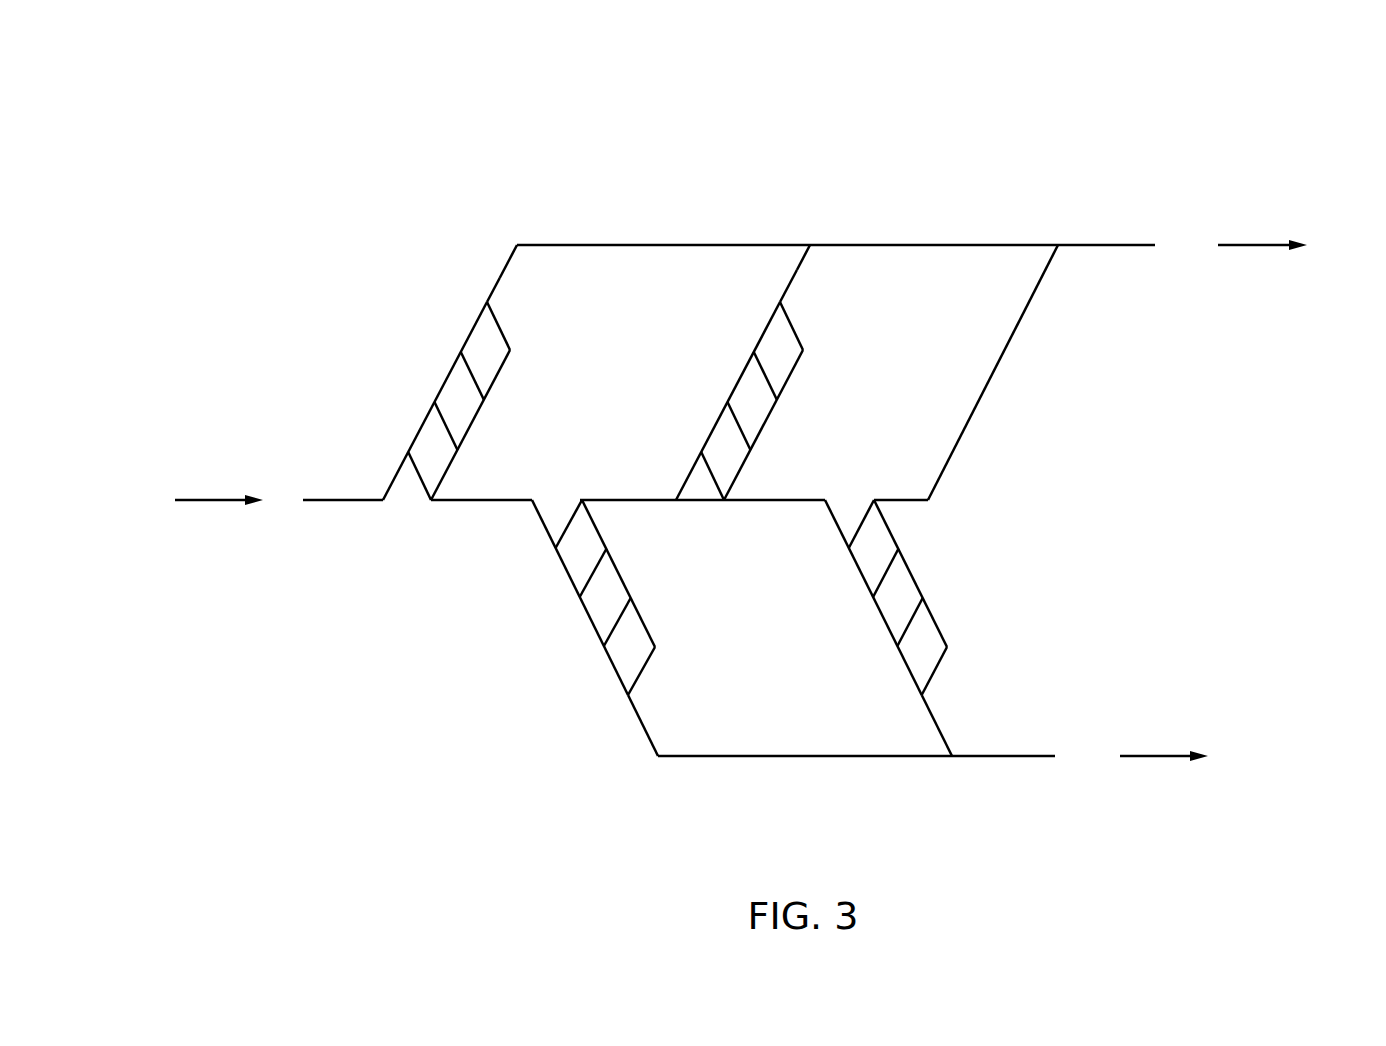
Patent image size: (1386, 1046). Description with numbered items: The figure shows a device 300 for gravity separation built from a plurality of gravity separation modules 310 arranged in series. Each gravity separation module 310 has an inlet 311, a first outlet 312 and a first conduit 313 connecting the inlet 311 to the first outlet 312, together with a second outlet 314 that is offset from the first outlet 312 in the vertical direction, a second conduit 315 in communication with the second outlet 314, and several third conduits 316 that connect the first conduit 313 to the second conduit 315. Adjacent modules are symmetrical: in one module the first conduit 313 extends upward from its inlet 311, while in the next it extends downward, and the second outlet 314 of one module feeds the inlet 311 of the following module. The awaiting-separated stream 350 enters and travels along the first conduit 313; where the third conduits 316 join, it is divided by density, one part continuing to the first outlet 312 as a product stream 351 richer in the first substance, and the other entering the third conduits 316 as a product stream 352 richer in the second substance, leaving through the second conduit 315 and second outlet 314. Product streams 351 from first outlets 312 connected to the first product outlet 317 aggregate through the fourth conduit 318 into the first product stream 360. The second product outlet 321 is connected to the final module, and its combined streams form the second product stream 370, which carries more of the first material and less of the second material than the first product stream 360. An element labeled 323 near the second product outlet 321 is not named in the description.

The device for gravity separation 300 is at (1240, 120).
The gravity separation module 310 is at (518, 228).
The inlet 311 is at (345, 500).
The first outlet 312 is at (492, 290).
The first conduit 313 is at (448, 373).
The second outlet 314 is at (483, 500).
The second conduit 315 is at (499, 373).
The third conduit 316 is at (568, 523).
The first product outlet 317 is at (993, 756).
The fourth conduit 318 is at (808, 756).
The second product outlet 321 is at (1110, 245).
The top line segment 323 is at (925, 245).
The awaiting-separated stream 350 is at (220, 500).
The product stream containing a higher concentration of the first substance 351 is at (507, 263).
The product stream containing a higher concentration of the second substance 352 is at (500, 327).
The first product stream 360 is at (1164, 756).
The second product stream 370 is at (1262, 245).